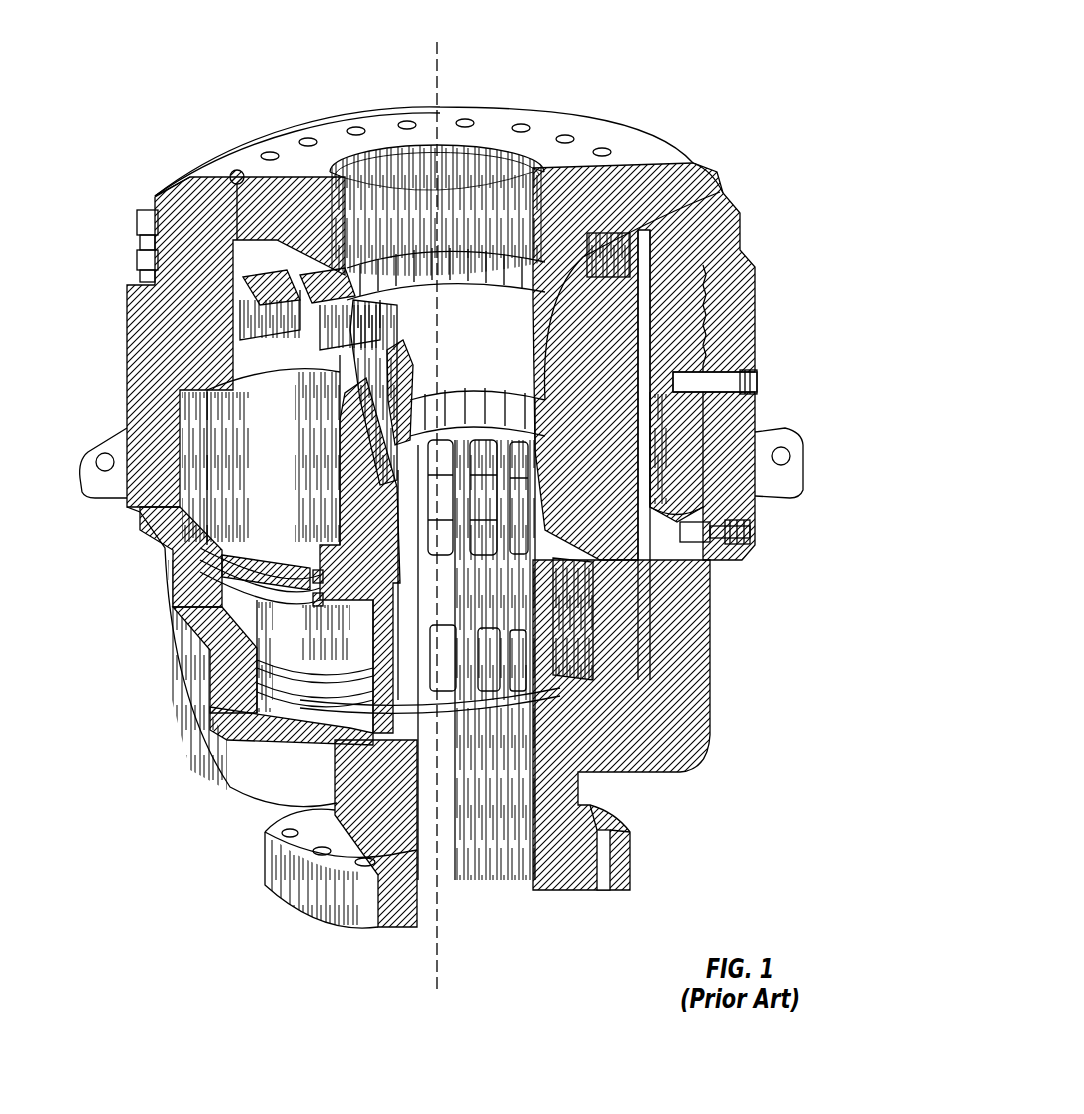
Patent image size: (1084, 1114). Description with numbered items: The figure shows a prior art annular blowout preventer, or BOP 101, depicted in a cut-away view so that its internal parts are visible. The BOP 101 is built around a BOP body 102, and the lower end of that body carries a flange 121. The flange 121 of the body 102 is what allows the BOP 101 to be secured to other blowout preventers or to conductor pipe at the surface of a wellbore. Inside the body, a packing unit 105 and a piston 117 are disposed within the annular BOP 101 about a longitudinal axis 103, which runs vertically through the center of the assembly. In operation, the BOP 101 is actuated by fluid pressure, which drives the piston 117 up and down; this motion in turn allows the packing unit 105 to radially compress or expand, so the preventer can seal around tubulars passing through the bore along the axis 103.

The annular blowout preventer 101 is at (682, 78).
The BOP body 102 is at (150, 418).
The longitudinal axis 103 is at (430, 38).
The packing unit 105 is at (720, 192).
The piston 117 is at (702, 532).
The flange 121 is at (630, 860).